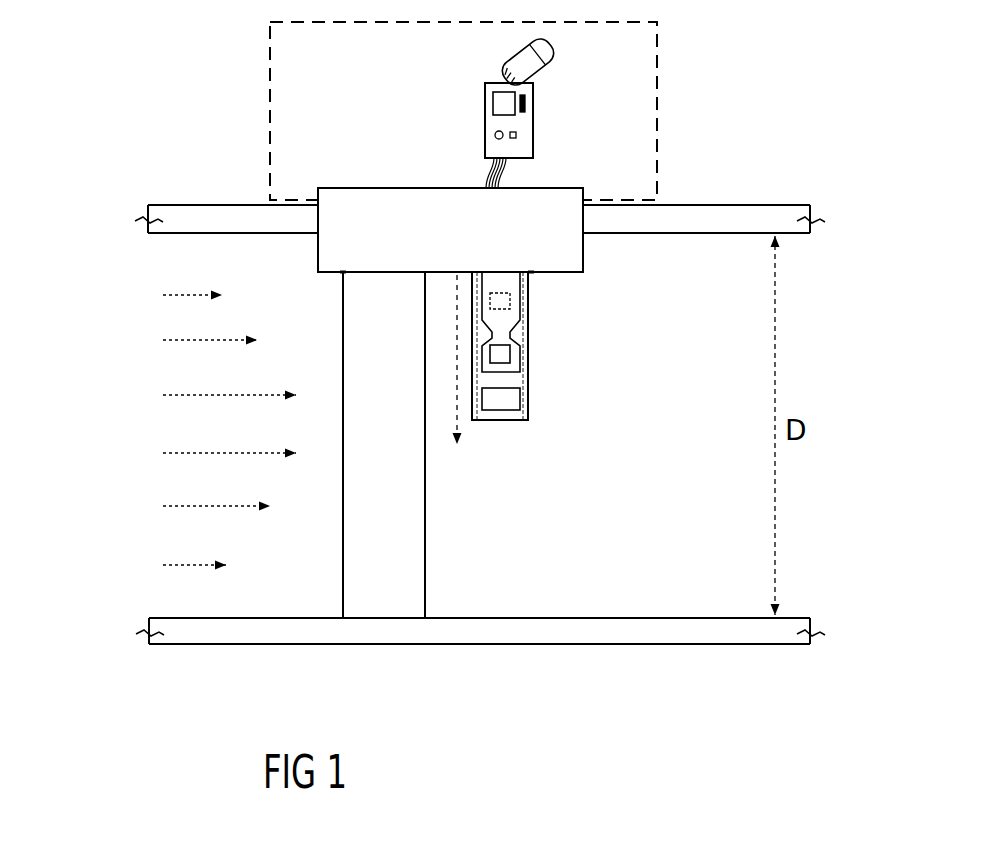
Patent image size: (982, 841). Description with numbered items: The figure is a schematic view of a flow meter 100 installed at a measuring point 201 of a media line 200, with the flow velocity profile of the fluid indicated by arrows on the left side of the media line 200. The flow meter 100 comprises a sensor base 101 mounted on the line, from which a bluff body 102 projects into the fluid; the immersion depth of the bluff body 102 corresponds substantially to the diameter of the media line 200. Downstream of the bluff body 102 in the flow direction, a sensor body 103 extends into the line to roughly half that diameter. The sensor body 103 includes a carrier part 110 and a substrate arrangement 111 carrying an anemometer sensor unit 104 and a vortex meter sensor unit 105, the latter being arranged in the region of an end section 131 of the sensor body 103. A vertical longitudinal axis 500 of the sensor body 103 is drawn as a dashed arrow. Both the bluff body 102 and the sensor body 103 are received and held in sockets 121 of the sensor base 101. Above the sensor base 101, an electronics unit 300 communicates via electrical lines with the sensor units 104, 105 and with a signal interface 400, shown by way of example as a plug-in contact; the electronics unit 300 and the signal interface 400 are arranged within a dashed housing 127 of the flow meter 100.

The flow meter 100 is at (692, 67).
The sensor base 101 is at (588, 239).
The bluff body 102 is at (431, 565).
The sensor body 103 is at (503, 425).
The anemometer sensor unit 104 is at (534, 350).
The vortex meter sensor unit 105 is at (531, 401).
The carrier part 110 is at (550, 402).
The substrate arrangement 111 is at (576, 402).
The sockets 121 is at (342, 277).
The housing 127 is at (660, 157).
The end section 131 is at (536, 414).
The media line 200 is at (176, 223).
The measuring point 201 is at (316, 217).
The electronics unit 300 is at (546, 121).
The signal interface 400 is at (487, 68).
The vertical longitudinal axis 500 is at (455, 384).